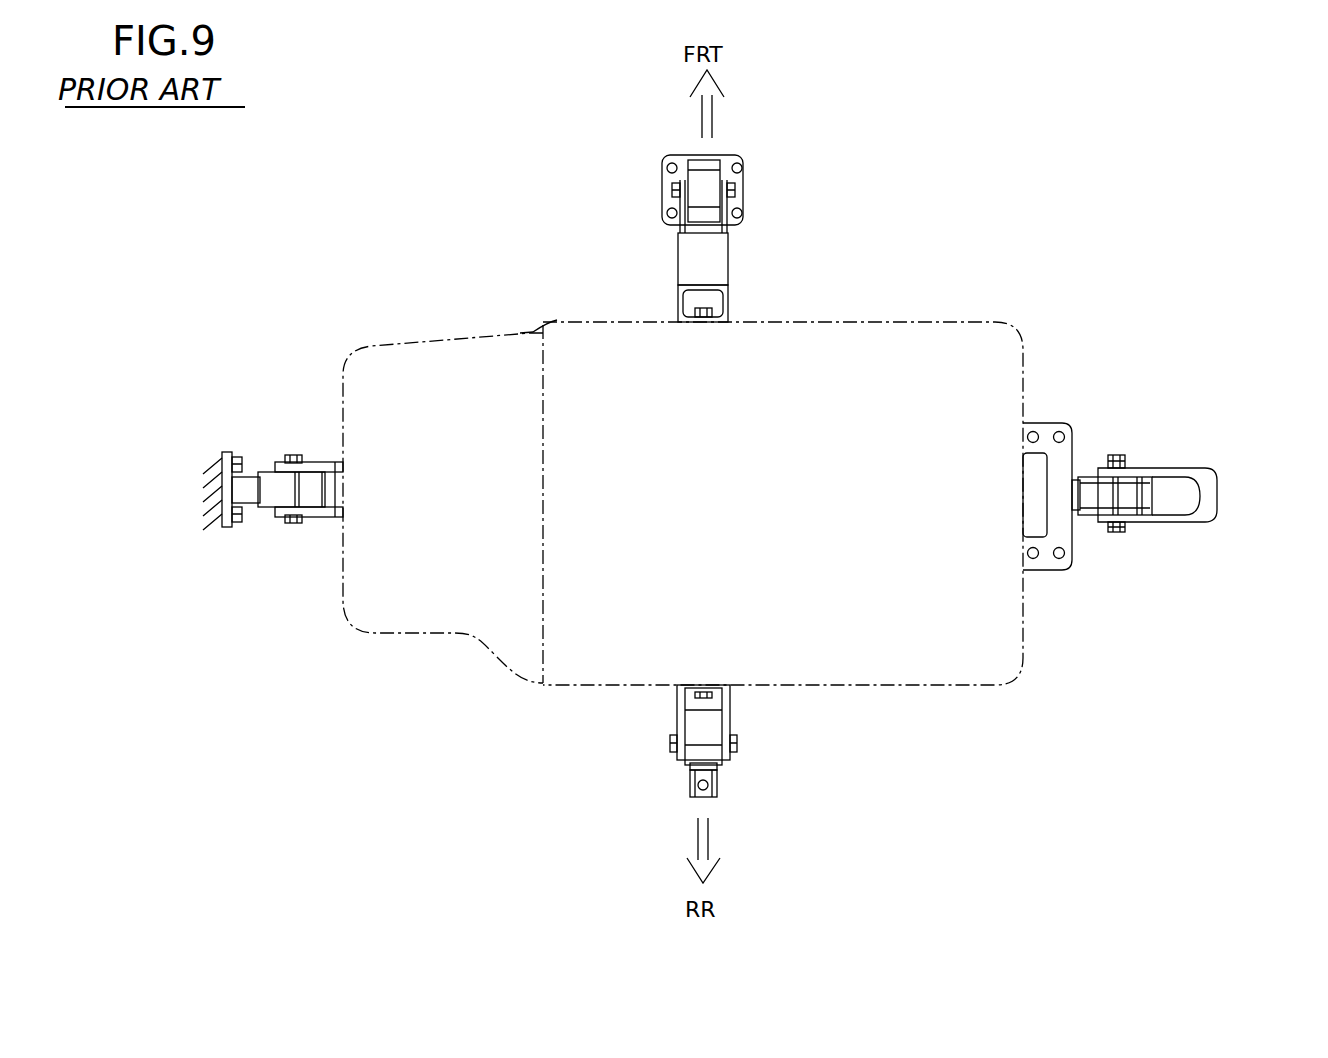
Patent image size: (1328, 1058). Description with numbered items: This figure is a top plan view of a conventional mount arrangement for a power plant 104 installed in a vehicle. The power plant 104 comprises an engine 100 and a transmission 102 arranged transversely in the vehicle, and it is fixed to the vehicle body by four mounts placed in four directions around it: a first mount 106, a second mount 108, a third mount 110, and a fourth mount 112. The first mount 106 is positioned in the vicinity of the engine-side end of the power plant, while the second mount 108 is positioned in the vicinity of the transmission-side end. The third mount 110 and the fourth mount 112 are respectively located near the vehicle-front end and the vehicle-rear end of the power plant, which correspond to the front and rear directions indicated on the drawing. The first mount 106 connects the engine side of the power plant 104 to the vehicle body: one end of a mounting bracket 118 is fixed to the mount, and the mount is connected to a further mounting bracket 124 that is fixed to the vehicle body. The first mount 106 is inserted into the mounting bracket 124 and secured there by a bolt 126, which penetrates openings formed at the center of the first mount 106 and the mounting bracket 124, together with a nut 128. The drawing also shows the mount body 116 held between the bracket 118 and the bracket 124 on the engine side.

The engine 100 is at (855, 323).
The transmission 102 is at (422, 342).
The power plant 104 is at (807, 267).
The first mount 106 is at (1235, 535).
The second mount 108 is at (283, 428).
The third mount 110 is at (768, 188).
The fourth mount 112 is at (782, 757).
The insulator bushing 116 is at (1145, 493).
The mounting bracket 118 is at (1062, 478).
The mounting bracket 124 is at (1203, 480).
The bolt 126 is at (1113, 533).
The nut 128 is at (1113, 458).